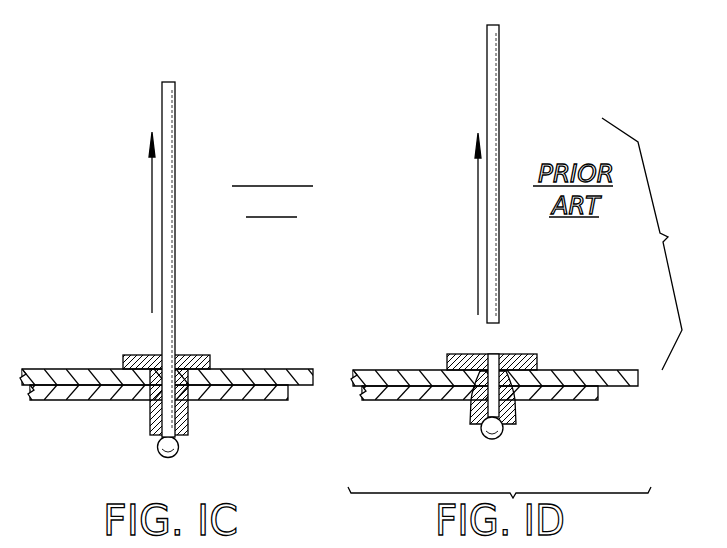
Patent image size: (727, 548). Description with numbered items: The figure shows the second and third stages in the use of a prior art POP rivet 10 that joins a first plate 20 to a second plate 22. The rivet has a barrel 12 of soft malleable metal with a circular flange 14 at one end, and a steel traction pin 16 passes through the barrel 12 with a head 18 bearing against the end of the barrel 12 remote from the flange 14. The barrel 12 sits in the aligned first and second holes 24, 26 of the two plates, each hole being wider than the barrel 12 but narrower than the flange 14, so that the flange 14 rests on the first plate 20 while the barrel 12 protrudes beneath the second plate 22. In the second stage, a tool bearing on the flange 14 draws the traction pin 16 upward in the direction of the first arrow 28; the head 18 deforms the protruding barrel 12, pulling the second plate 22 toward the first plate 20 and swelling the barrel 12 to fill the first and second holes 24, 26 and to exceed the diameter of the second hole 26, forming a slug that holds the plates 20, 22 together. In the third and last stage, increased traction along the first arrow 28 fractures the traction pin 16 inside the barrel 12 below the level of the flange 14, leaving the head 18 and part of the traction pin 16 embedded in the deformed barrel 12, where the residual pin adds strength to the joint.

In FIG. 1C, the POP rivet 10 is at (211, 226).
In FIG. 1C, the barrel 12 is at (156, 413).
In FIG. 1D, the barrel 12 is at (473, 413).
In FIG. 1C, the flange 14 is at (196, 354).
In FIG. 1D, the flange 14 is at (527, 354).
In FIG. 1C, the traction pin 16 is at (175, 153).
In FIG. 1D, the traction pin 16 is at (499, 98).
In FIG. 1C, the head 18 is at (175, 456).
In FIG. 1D, the head 18 is at (500, 438).
In FIG. 1C, the first plate 20 is at (297, 370).
In FIG. 1D, the first plate 20 is at (613, 372).
In FIG. 1C, the second plate 22 is at (265, 400).
In FIG. 1D, the second plate 22 is at (587, 392).
In FIG. 1C, the first hole 24 is at (130, 413).
In FIG. 1C, the second hole 26 is at (153, 400).
In FIG. 1C, the first arrow 28 is at (152, 233).
In FIG. 1D, the first arrow 28 is at (478, 228).